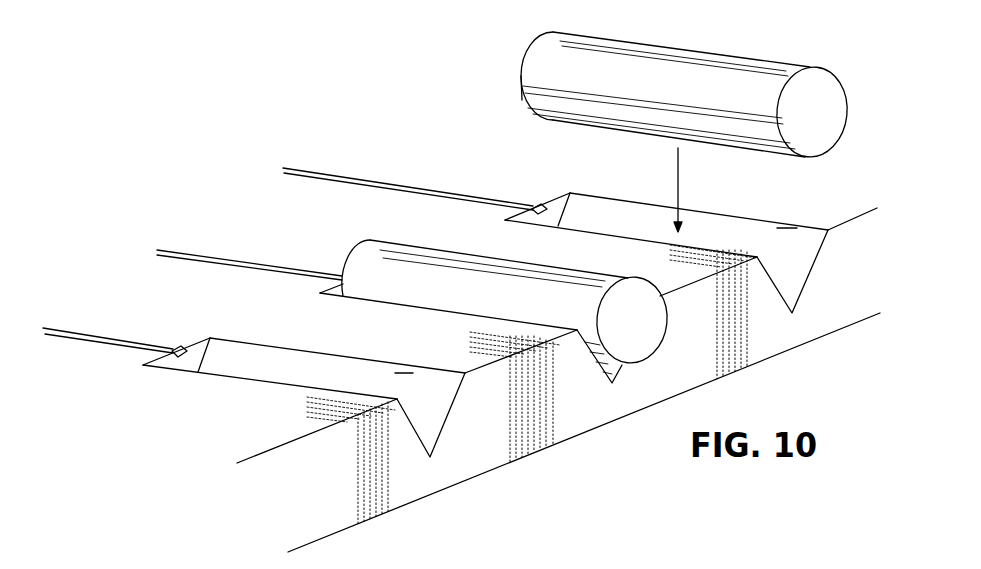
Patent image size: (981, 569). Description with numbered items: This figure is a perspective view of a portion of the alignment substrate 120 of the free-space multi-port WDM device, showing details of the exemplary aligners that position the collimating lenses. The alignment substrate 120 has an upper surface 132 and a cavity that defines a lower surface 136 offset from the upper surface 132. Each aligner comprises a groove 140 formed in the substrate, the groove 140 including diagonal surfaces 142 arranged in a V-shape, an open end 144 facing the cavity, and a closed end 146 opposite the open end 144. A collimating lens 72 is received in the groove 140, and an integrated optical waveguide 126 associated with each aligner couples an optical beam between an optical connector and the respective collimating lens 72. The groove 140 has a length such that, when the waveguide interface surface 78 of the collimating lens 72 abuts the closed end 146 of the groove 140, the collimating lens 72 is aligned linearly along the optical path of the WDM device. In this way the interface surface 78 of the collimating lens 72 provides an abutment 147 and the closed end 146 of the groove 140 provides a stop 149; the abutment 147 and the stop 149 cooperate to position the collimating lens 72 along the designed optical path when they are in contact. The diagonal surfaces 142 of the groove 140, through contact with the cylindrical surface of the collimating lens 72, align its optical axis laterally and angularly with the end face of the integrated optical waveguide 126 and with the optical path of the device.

The alignment substrate 120 is at (876, 134).
The collimating lens 72 is at (767, 68).
The waveguide interface surface 78 is at (522, 72).
The abutment 147 is at (517, 90).
The integrated optical waveguide 126 is at (317, 168).
The upper surface 132 is at (225, 428).
The lower surface 136 is at (502, 516).
The groove 140 is at (342, 368).
The diagonal surfaces 142 is at (407, 370).
The open end 144 is at (452, 417).
The closed end 146 is at (202, 336).
The stop 149 is at (210, 352).